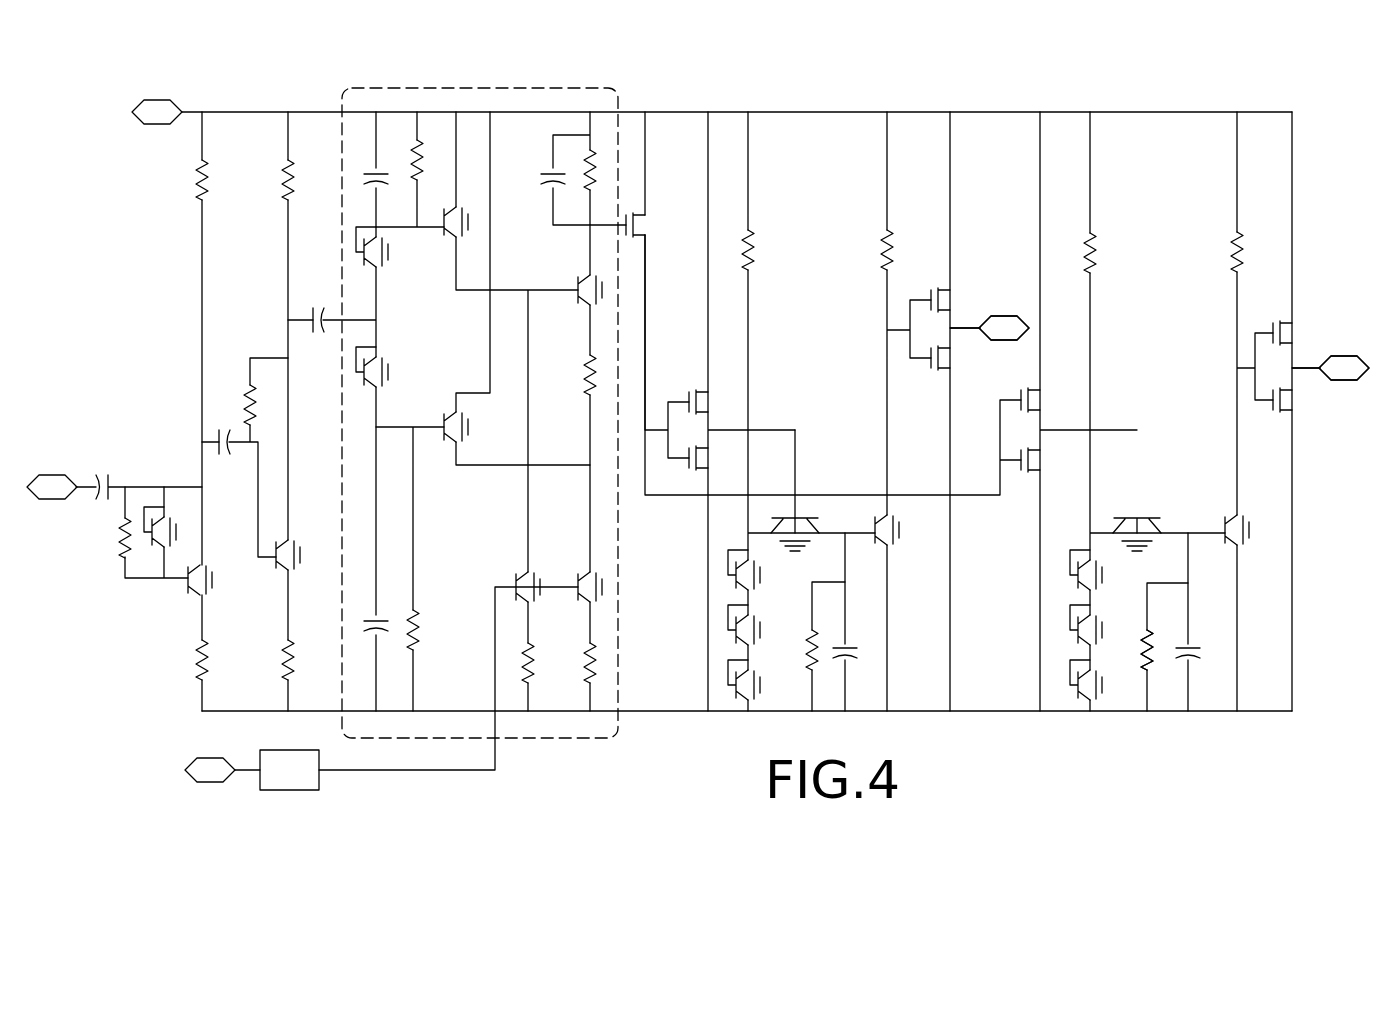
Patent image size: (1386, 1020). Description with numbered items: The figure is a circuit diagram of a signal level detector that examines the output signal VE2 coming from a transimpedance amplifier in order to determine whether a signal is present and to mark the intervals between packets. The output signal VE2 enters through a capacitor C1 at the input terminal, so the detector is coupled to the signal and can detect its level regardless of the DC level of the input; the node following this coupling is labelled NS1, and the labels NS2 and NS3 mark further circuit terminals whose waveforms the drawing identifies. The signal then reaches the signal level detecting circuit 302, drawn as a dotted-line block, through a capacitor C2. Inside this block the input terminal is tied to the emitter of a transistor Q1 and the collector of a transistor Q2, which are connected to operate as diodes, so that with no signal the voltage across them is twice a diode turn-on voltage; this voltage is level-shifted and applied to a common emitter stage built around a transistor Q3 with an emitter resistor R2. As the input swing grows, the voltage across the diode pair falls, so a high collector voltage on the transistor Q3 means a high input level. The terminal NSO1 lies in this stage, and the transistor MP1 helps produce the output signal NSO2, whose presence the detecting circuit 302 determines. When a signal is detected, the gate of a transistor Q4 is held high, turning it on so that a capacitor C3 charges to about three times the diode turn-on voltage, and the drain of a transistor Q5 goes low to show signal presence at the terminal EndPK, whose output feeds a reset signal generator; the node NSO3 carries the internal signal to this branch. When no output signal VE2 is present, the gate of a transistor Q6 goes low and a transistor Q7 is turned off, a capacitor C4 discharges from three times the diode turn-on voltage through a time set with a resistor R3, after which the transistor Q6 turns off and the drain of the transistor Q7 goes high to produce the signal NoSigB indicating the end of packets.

The signal level detecting circuit 302 is at (497, 87).
The node NS1 is at (186, 411).
The node NS2 is at (276, 320).
The node NS3 is at (372, 312).
The capacitor C1 is at (146, 473).
The capacitor C2 is at (320, 305).
The capacitor C3 is at (850, 648).
The capacitor C4 is at (1193, 648).
The transistor Q1 is at (389, 193).
The transistor Q2 is at (389, 529).
The transistor Q3 is at (574, 290).
The transistor Q4 is at (803, 540).
The transistor Q5 is at (904, 530).
The transistor Q6 is at (1148, 543).
The transistor Q7 is at (1255, 531).
The resistor R2 is at (575, 410).
The resistor R3 is at (1134, 650).
The transistor MP1 is at (658, 225).
The node NSO1 is at (581, 185).
The output signal NSO2 is at (673, 332).
The node NSO3 is at (821, 474).
The output signal VE2 is at (61, 473).
The EndPK terminal EndPK is at (990, 314).
The NoSigB signal NoSigB is at (1335, 384).